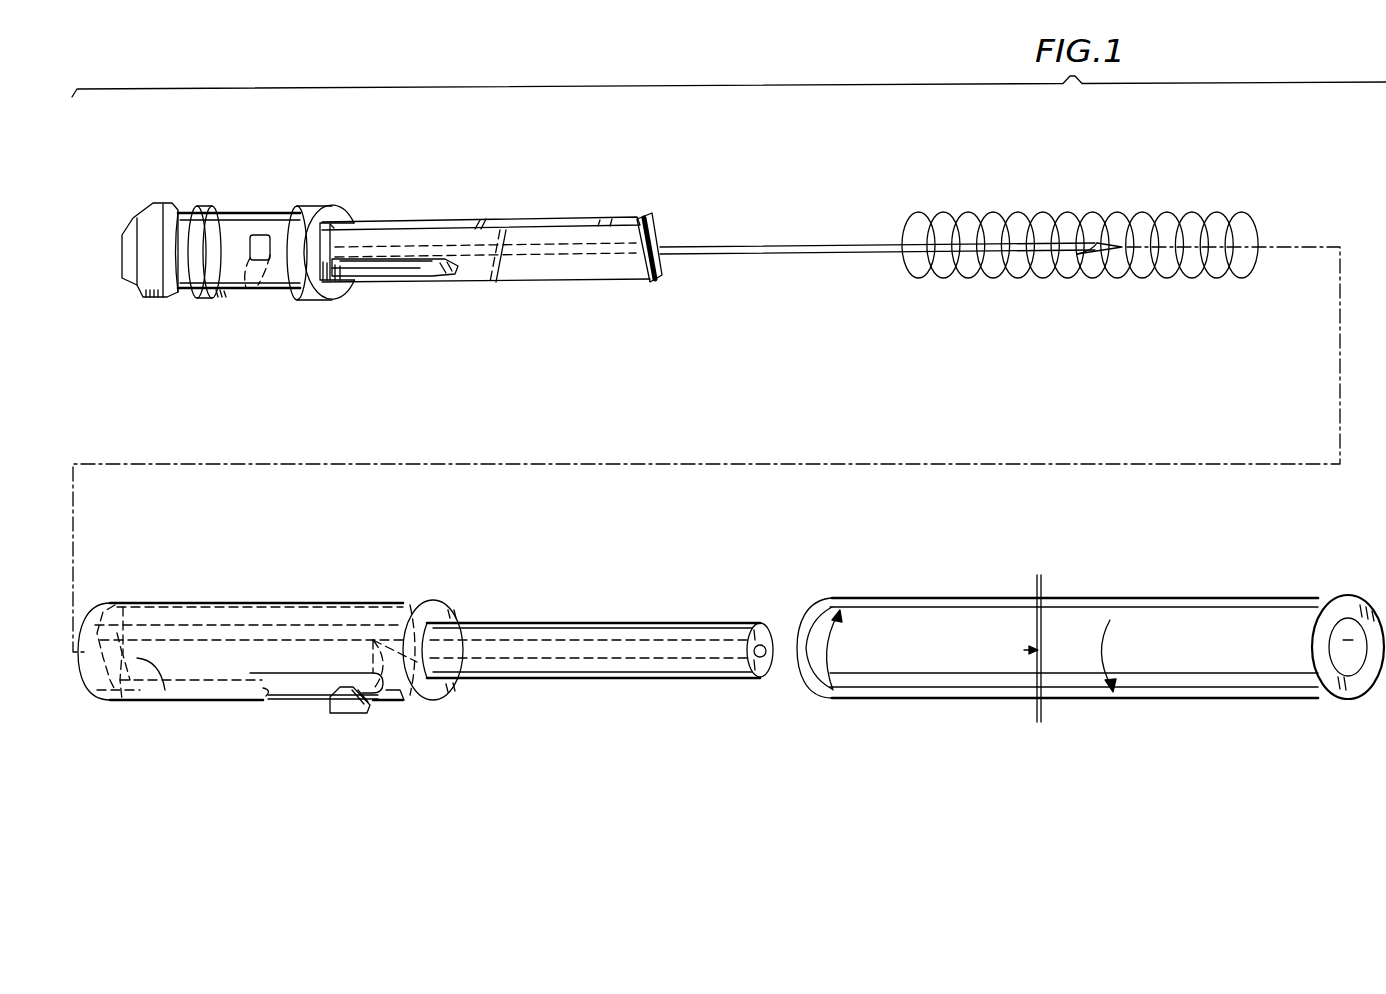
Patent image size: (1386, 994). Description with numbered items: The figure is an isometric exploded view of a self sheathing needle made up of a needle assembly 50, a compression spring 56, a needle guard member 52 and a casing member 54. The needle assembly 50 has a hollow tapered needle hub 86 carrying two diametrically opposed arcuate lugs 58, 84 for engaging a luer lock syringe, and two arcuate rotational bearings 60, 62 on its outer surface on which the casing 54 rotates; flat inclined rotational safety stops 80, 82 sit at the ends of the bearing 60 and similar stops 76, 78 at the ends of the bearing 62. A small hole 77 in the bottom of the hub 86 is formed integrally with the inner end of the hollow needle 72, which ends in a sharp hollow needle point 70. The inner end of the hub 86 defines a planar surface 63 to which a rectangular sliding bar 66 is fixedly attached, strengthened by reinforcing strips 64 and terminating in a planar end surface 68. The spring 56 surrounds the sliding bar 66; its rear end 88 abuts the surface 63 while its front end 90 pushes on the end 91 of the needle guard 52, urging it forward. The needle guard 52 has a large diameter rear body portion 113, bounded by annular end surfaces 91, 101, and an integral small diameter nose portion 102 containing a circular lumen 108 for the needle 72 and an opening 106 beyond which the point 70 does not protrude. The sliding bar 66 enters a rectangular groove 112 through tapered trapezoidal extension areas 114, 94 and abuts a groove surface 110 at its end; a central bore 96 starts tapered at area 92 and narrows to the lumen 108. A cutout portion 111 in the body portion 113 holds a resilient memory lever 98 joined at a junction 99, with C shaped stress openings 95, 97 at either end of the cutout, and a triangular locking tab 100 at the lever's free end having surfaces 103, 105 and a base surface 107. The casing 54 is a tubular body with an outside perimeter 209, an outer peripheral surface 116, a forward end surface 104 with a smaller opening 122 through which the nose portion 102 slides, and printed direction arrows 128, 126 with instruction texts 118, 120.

The needle assembly 50 is at (593, 166).
The needle guard member 52 is at (300, 772).
The casing member 54 is at (1060, 738).
The compression spring 56 is at (1021, 210).
The arcuate projection or lug 58 is at (178, 210).
The arcuate rotational bearing 60 is at (214, 298).
The arcuate rotational bearing 62 is at (300, 299).
The planar surface 63 is at (334, 300).
The rectangular reinforcing strip 64 is at (437, 268).
The sliding bar portion 66 is at (590, 268).
The planar end surface 68 is at (648, 230).
The needle point 70 is at (1100, 255).
The hollow needle 72 is at (816, 255).
The rotational safety stop 76 is at (333, 206).
The small hole 77 is at (335, 256).
The rotational safety stop 78 is at (365, 235).
The rotational safety stop 80 is at (243, 212).
The rotational safety stop 82 is at (265, 236).
The arcuate projection or lug 84 is at (137, 287).
The needle hub 86 is at (178, 268).
The rear end of spring 88 is at (902, 240).
The front end of spring 90 is at (1258, 240).
The end of needle guard 91 is at (103, 700).
The tapered area 92 is at (105, 680).
The enlarged extension area 94 is at (141, 700).
The C shaped stress opening 95 is at (266, 708).
The central bore 96 is at (165, 690).
The C shaped stress opening 97 is at (252, 673).
The memory lever 98 is at (310, 690).
The junction 99 is at (262, 689).
The locking tab 100 is at (347, 703).
The annular end surface 101 is at (450, 612).
The nose portion 102 is at (605, 622).
The surface of locking tab 103 is at (368, 709).
The end surface 104 is at (762, 624).
The rear surface of locking tab 105 is at (333, 700).
The opening 106 is at (760, 660).
The base surface of locking tab 107 is at (339, 713).
The needle guard shaft circular lumen 108 is at (652, 650).
The rectangular groove surface 110 is at (413, 605).
The cutout portion 111 is at (403, 704).
The rectangular groove 112 is at (232, 618).
The rear body portion 113 is at (170, 603).
The enlarged extension area 114 is at (118, 606).
The outer peripheral surface 116 is at (1265, 598).
The instruction text 118 is at (862, 662).
The instruction text 120 is at (1206, 662).
The opening 122 is at (1350, 657).
The direction arrow 126 is at (1123, 610).
The direction arrow 128 is at (830, 640).
The outside perimeter 209 is at (804, 680).